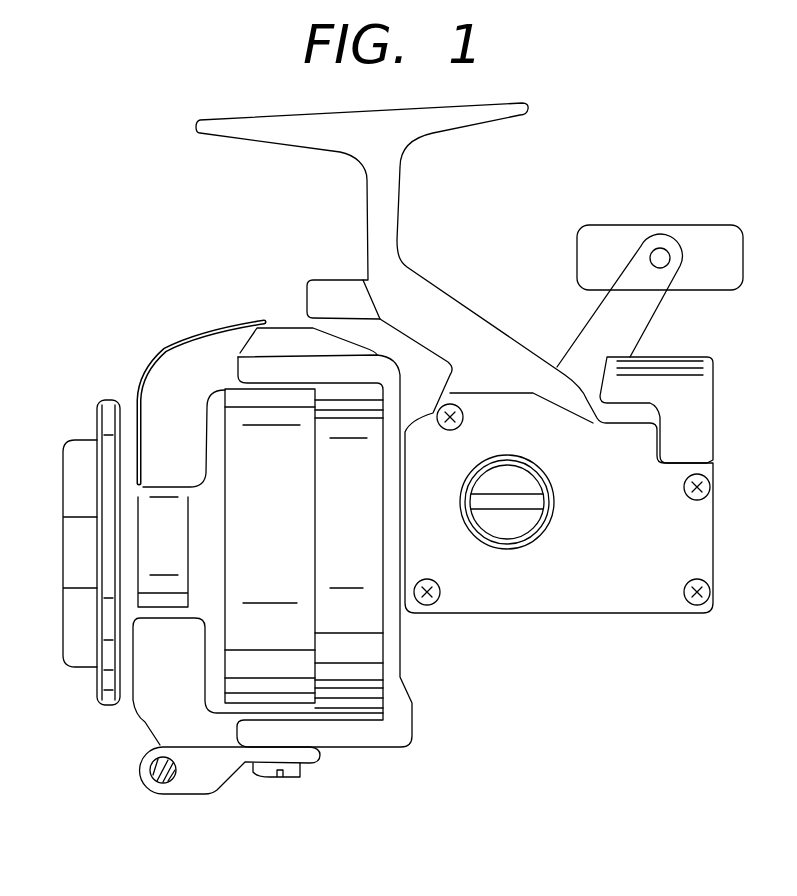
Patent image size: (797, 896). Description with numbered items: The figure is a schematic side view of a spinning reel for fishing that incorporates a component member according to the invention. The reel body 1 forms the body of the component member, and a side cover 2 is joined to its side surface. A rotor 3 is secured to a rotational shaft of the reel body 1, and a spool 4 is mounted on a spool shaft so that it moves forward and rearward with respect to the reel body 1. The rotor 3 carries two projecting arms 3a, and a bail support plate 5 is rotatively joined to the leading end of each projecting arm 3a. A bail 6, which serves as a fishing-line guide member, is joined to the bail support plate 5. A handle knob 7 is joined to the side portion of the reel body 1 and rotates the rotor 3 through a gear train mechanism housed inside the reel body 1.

The reel body 1 is at (463, 330).
The side cover 2 is at (557, 600).
The rotor 3 is at (387, 648).
The projecting arm 3a is at (343, 733).
The spool 4 is at (108, 420).
The bail support plate 5 is at (213, 770).
The bail 6 is at (210, 327).
The handle knob 7 is at (650, 237).